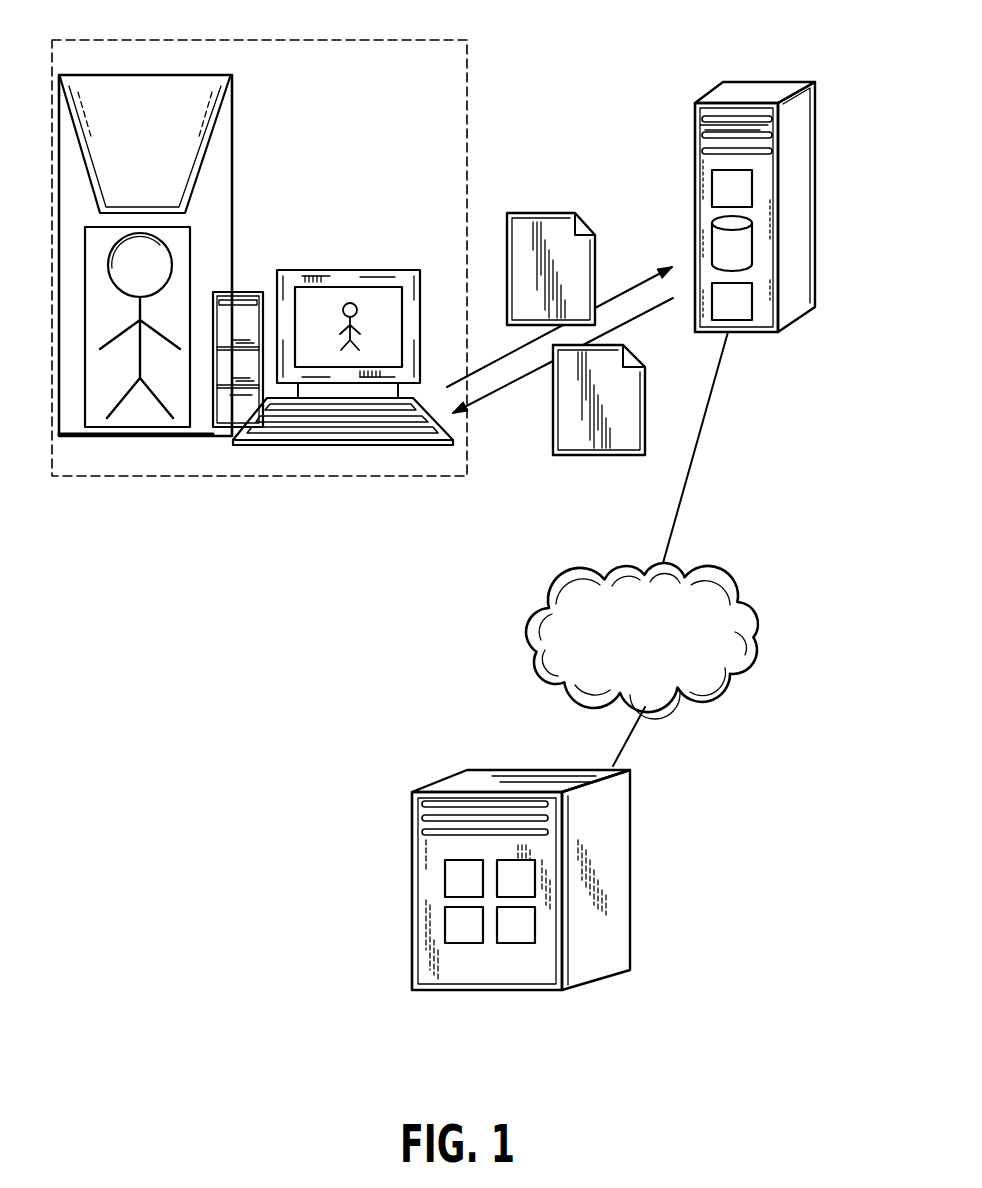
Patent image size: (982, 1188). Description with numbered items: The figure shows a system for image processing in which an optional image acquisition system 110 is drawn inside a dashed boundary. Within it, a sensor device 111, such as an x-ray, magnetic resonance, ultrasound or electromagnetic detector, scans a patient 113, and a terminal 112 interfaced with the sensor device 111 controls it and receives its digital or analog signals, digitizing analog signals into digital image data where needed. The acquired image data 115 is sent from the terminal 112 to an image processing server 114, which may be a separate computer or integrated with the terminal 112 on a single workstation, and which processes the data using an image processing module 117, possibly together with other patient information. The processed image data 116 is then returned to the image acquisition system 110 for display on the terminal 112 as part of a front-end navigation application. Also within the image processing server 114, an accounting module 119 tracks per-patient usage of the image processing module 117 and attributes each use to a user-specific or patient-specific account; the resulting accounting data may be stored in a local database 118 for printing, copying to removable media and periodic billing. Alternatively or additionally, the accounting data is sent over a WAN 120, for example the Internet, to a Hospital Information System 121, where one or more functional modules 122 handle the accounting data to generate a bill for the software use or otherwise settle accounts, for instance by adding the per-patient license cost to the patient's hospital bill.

The image acquisition system 110 is at (393, 476).
The sensor device 111 is at (232, 138).
The terminal 112 is at (278, 443).
The patient 113 is at (178, 412).
The image processing server 114 is at (788, 232).
The image data 115 is at (532, 213).
The processed image data 116 is at (593, 455).
The image processing module 117 is at (752, 185).
The local database 118 is at (752, 240).
The accounting module 119 is at (752, 298).
The WAN 120 is at (703, 697).
The Hospital Information System 121 is at (524, 886).
The functional module 122 is at (439, 907).